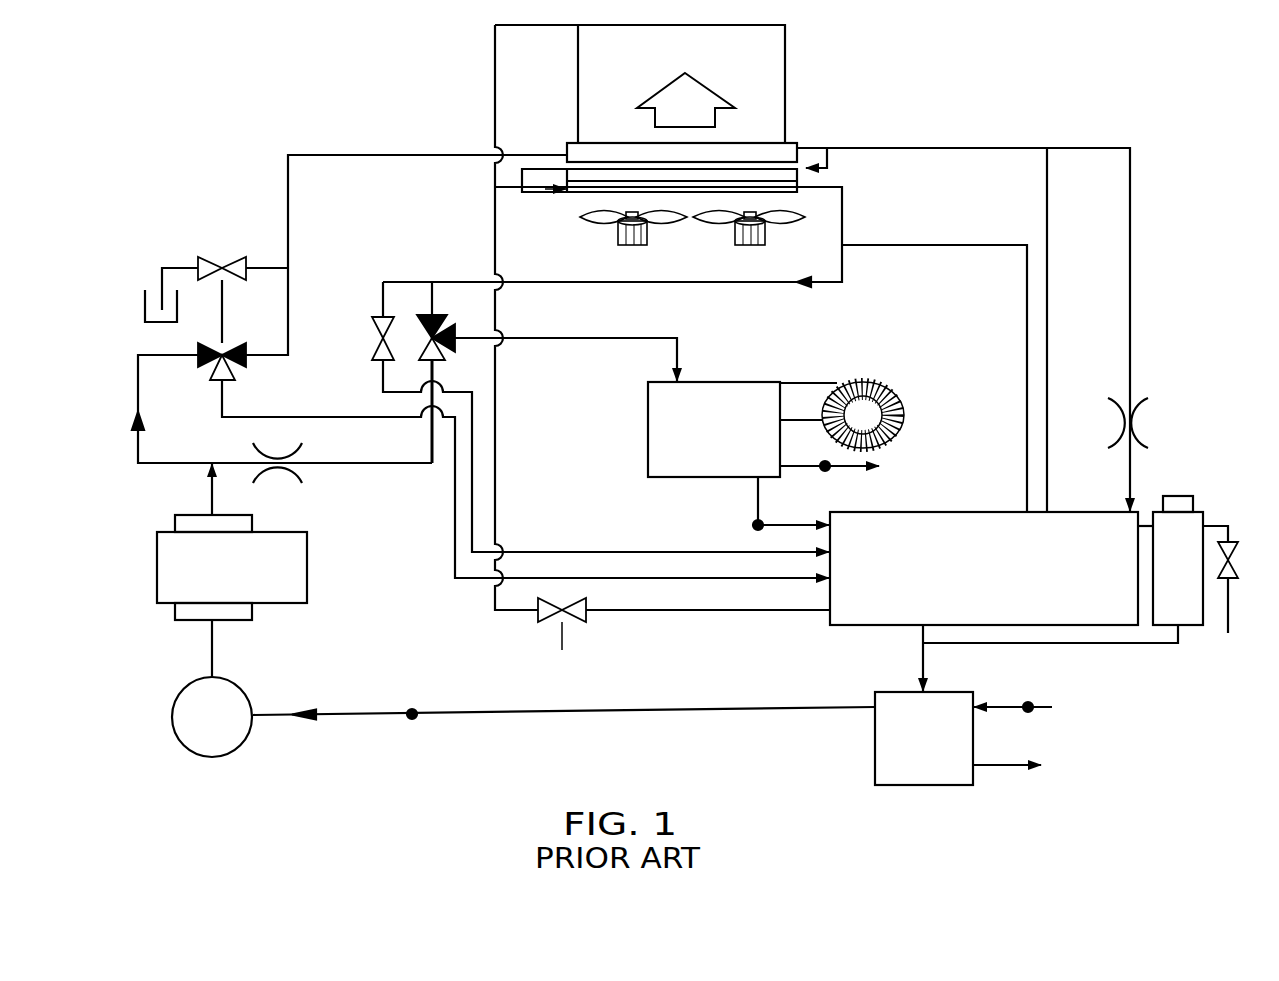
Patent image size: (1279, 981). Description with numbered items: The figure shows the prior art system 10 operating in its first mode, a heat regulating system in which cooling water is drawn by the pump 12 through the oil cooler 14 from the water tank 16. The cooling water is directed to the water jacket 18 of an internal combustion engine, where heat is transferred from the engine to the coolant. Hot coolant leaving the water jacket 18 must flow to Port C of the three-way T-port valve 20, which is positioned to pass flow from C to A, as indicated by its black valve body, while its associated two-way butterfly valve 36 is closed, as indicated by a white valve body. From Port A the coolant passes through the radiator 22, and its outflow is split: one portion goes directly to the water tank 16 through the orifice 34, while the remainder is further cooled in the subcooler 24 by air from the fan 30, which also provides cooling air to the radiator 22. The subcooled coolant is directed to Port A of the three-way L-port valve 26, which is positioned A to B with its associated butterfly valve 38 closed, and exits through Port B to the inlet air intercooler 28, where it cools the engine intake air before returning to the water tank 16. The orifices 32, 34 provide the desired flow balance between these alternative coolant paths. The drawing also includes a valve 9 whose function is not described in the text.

The prior art system 10 is at (1006, 99).
The pump 12 is at (228, 727).
The oil cooler 14 is at (938, 753).
The water tank 16 is at (1021, 583).
The water jacket 18 is at (246, 575).
The three-way T-port valve 20 is at (216, 370).
The radiator 22 is at (633, 143).
The subcooler 24 is at (580, 193).
The three-way L-port valve 26 is at (428, 313).
The inlet air intercooler 28 is at (724, 440).
The fan 30 is at (737, 240).
The orifice 32 is at (303, 471).
The orifice 34 is at (1138, 400).
The two-way butterfly valve 36 is at (208, 257).
The butterfly valve 38 is at (372, 330).
The drain valve 9 is at (540, 615).